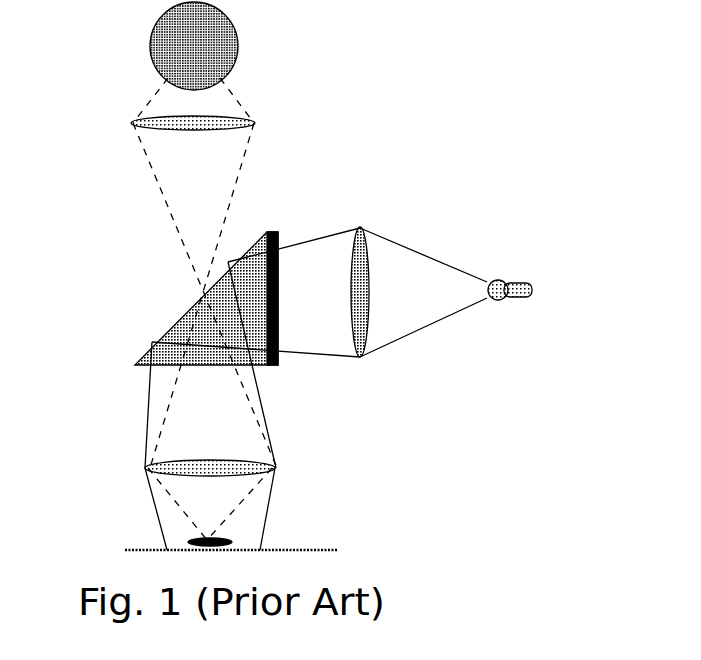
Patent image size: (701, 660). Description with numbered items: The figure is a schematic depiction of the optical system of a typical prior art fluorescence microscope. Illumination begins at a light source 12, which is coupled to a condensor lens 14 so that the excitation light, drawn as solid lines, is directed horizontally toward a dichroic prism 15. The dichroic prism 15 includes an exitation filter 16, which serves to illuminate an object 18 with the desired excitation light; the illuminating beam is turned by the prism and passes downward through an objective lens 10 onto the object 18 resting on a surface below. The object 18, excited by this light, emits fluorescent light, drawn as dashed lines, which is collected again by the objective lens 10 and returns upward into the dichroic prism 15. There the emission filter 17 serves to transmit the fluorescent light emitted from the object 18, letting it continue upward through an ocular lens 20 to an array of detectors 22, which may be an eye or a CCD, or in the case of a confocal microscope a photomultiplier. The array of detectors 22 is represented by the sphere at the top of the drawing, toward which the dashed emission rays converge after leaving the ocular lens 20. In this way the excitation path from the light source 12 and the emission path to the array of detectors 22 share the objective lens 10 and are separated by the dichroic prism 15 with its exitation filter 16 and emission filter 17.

The objective lens 10 is at (145, 467).
The light source 12 is at (518, 298).
The condensor lens 14 is at (368, 273).
The dichroic prism 15 is at (178, 323).
The exitation filter 16 is at (278, 297).
The emission filter 17 is at (232, 260).
The object 18 is at (203, 533).
The ocular lens 20 is at (168, 132).
The array of detectors 22 is at (158, 52).